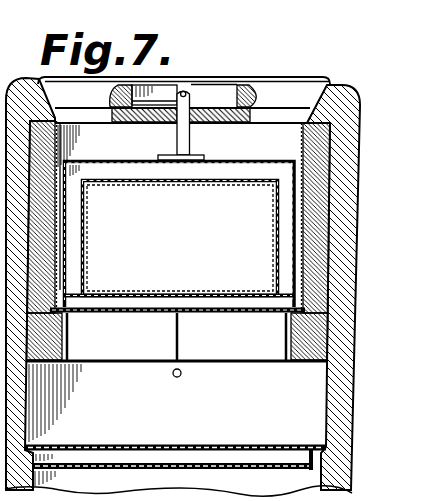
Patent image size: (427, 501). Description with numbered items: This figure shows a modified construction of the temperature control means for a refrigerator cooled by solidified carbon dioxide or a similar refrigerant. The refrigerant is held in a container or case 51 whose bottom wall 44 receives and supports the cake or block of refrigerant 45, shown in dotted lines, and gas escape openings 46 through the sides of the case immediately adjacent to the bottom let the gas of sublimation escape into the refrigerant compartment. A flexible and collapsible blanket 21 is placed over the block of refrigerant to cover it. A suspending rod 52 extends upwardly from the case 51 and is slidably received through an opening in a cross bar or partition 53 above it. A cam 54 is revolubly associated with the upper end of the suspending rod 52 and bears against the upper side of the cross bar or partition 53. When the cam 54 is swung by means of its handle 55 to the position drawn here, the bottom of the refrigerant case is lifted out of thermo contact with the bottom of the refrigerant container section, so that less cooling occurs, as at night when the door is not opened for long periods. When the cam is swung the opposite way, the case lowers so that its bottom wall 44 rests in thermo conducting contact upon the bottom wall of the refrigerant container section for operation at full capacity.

The blanket 21 is at (256, 186).
The bottom wall 44 is at (222, 296).
The block of refrigerant 45 is at (85, 248).
The gas escape openings 46 is at (72, 313).
The container or case 51 is at (249, 161).
The suspending rod 52 is at (190, 138).
The cross bar or partition 53 is at (100, 118).
The cam 54 is at (207, 83).
The handle 55 is at (159, 82).